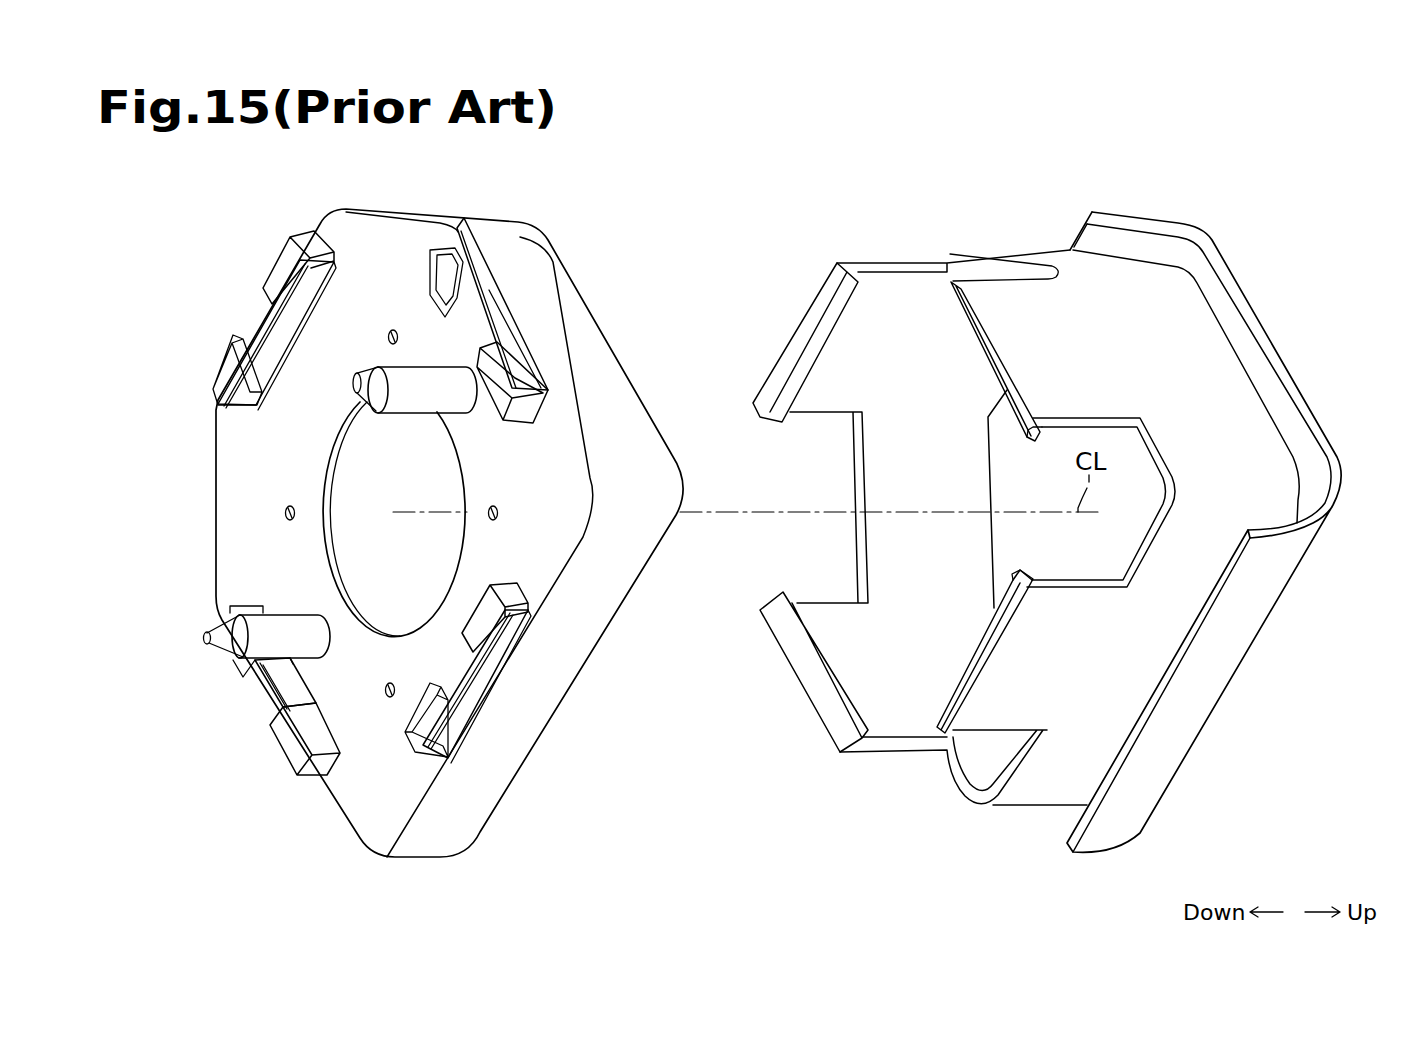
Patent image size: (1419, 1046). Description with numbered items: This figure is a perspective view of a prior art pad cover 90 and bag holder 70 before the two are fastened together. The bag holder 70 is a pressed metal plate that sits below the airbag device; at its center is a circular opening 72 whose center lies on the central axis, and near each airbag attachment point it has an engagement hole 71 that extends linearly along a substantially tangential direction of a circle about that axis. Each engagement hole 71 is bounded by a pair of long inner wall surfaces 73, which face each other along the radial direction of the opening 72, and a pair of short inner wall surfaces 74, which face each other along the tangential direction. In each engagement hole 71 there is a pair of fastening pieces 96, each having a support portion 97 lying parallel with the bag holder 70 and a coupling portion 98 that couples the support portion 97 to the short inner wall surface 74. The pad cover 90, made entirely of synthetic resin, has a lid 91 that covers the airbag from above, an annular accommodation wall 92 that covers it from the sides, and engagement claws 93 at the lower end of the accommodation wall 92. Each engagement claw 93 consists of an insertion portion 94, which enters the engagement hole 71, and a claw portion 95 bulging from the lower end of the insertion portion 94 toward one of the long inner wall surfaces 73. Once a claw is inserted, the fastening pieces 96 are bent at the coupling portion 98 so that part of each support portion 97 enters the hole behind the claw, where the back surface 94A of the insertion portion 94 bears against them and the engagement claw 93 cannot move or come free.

The bag holder 70 is at (643, 573).
The engagement hole 71 is at (538, 252).
The opening 72 is at (462, 474).
The long inner wall surface 73 is at (487, 290).
The short inner wall surface 74 is at (463, 265).
The pad cover 90 is at (1072, 530).
The lid 91 is at (1352, 334).
The accommodation wall 92 is at (1187, 307).
The engagement claw 93 is at (963, 507).
The insertion portion 94 is at (970, 280).
The back surface 94A is at (998, 350).
The claw portion 95 is at (767, 418).
The fastening piece 96 is at (387, 540).
The support portion 97 is at (270, 265).
The coupling portion 98 is at (308, 247).